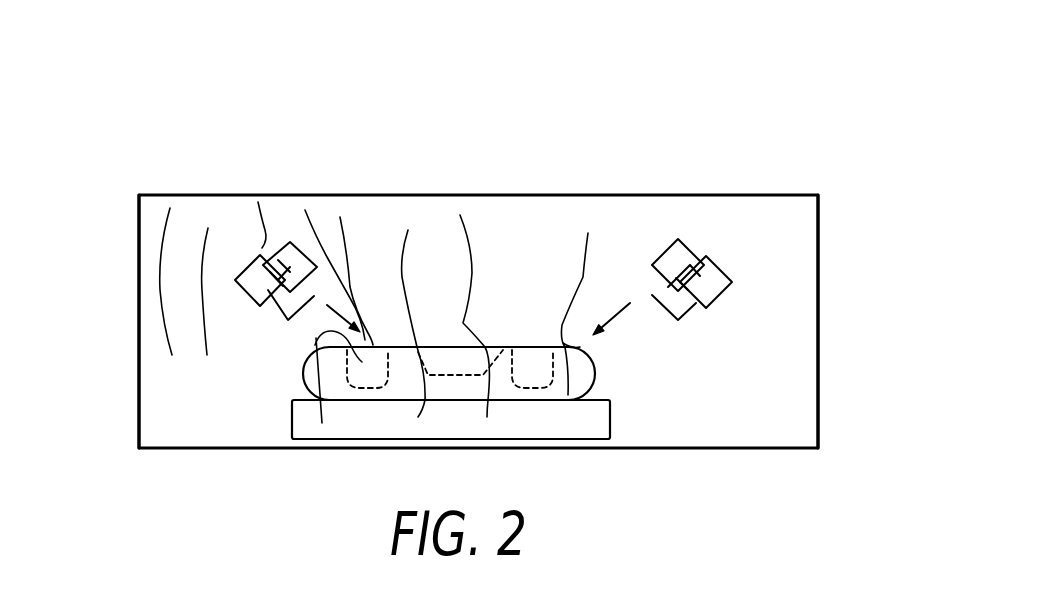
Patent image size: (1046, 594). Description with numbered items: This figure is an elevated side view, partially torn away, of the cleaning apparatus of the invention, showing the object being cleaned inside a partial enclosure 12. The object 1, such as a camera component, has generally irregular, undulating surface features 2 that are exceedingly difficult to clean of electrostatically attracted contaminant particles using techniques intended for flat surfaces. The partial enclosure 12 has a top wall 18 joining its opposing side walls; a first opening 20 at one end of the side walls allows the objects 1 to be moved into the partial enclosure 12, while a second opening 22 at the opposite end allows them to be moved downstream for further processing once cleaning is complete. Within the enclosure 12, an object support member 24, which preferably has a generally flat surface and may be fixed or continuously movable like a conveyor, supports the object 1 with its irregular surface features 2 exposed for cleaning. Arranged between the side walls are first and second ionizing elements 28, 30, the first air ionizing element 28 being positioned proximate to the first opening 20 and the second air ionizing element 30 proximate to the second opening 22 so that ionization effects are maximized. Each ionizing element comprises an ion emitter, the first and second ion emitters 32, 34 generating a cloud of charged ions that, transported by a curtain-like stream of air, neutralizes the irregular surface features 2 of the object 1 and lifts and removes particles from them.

The object 1 is at (305, 382).
The irregular surface features 2 is at (380, 347).
The partial enclosure 12 is at (630, 116).
The top wall 18 is at (419, 192).
The first opening 20 is at (140, 363).
The second opening 22 is at (818, 343).
The object support member 24 is at (610, 418).
The first ionizing element 28 is at (258, 254).
The second ionizing element 30 is at (769, 301).
The first ion emitter 32 is at (285, 320).
The second ion emitter 34 is at (692, 307).